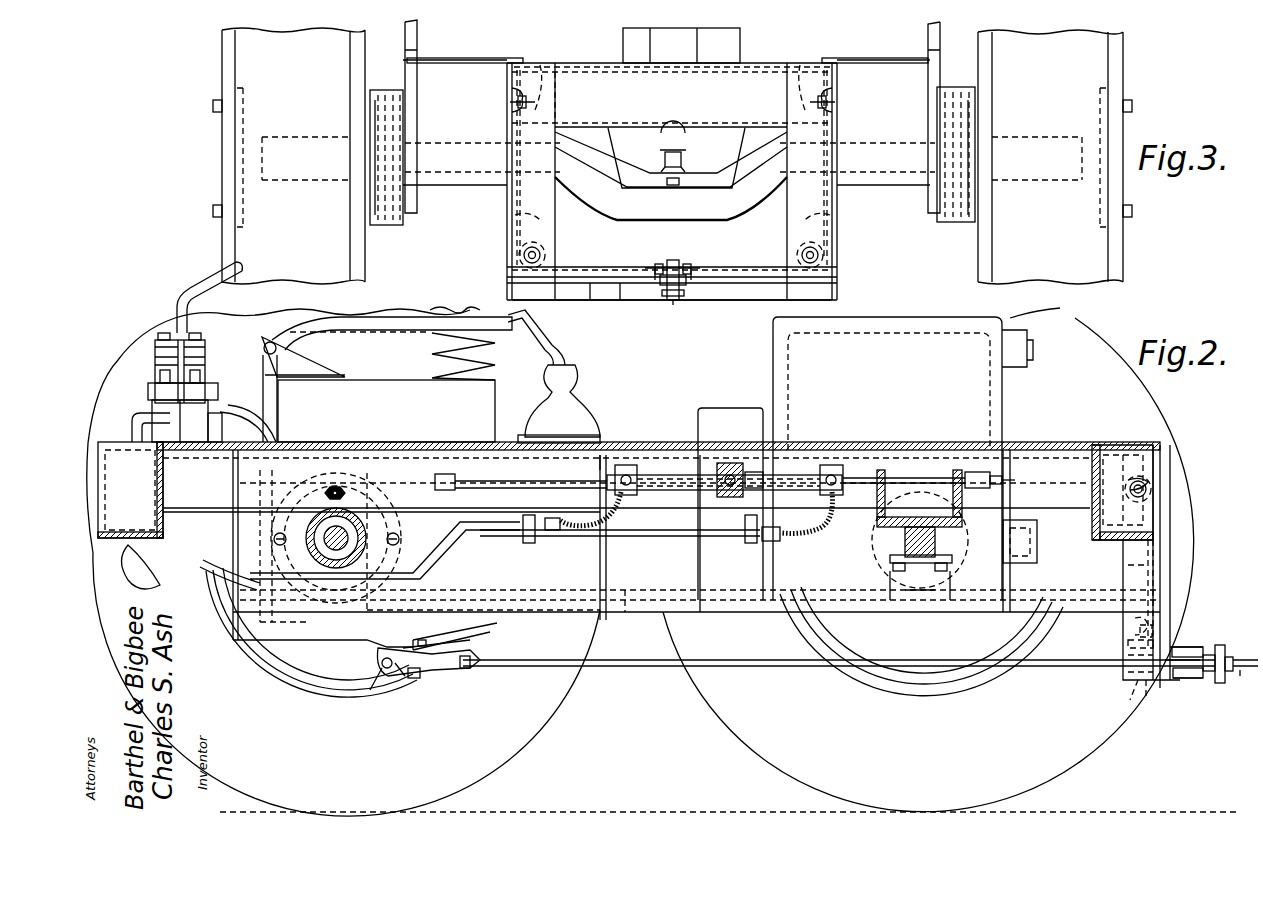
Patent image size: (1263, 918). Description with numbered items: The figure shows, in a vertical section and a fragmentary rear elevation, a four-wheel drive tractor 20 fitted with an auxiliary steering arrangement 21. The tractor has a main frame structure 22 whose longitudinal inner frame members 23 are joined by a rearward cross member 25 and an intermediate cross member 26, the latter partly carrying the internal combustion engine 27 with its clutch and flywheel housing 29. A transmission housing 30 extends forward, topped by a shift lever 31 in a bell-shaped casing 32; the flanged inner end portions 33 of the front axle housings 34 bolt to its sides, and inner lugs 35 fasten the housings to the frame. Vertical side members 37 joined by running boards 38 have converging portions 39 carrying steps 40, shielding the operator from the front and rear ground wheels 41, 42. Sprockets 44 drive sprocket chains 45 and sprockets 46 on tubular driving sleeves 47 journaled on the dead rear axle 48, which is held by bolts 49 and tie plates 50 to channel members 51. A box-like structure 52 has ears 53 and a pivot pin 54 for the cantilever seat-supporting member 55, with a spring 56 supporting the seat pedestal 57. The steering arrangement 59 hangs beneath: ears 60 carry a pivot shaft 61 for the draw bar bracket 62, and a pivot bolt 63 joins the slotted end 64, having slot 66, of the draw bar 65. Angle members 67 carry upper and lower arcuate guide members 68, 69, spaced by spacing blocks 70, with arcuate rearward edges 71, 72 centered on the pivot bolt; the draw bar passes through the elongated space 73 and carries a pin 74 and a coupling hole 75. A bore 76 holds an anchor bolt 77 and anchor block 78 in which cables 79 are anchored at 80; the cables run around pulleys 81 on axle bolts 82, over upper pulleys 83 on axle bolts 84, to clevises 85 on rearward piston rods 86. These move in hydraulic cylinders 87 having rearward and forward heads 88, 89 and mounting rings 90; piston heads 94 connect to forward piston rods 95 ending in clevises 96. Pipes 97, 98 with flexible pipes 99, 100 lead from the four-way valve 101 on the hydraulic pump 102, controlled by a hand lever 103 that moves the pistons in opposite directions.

In FIG. 2, the four-wheel drive tractor 20 is at (1126, 330).
In FIG. 2, the auxiliary steering arrangement 21 is at (1120, 438).
In FIG. 2, the main frame structure 22 is at (670, 438).
In FIG. 3, the longitudinal inner frame members 23 is at (545, 65).
In FIG. 2, the longitudinal inner frame members 23 is at (496, 550).
In FIG. 3, the rearward cross member 25 is at (760, 72).
In FIG. 3, the intermediate cross member 26 is at (745, 160).
In FIG. 2, the intermediate cross member 26 is at (1020, 563).
In FIG. 3, the internal combustion engine 27 is at (623, 43).
In FIG. 2, the internal combustion engine 27 is at (903, 458).
In FIG. 2, the clutch and flywheel housing 29 is at (732, 408).
In FIG. 2, the transmission housing 30 is at (532, 612).
In FIG. 2, the shift lever 31 is at (530, 322).
In FIG. 2, the bell-shaped casing 32 is at (575, 420).
In FIG. 2, the flanged inner end portions 33 is at (397, 548).
In FIG. 2, the front axle housings 34 is at (368, 540).
In FIG. 2, the inner lugs 35 is at (318, 488).
In FIG. 3, the side members 37 is at (418, 30).
In FIG. 2, the side members 37 is at (684, 612).
In FIG. 3, the horizontal plates or running boards 38 is at (492, 58).
In FIG. 2, the horizontal plates or running boards 38 is at (393, 442).
In FIG. 3, the converging portions 39 is at (428, 70).
In FIG. 2, the converging portions 39 is at (160, 486).
In FIG. 3, the steps 40 is at (457, 178).
In FIG. 2, the steps 40 is at (128, 536).
In FIG. 2, the front ground wheels 41 is at (520, 722).
In FIG. 2, the rear ground wheels 42 is at (745, 742).
In FIG. 2, the sprockets 44 is at (372, 496).
In FIG. 3, the sprocket chains 45 is at (397, 225).
In FIG. 2, the sprocket chains 45 is at (628, 615).
In FIG. 3, the sprockets 46 is at (380, 225).
In FIG. 2, the sprockets 46 is at (880, 585).
In FIG. 3, the tubular driving sleeves 47 is at (318, 137).
In FIG. 3, the rear axle 48 is at (600, 208).
In FIG. 2, the rear axle 48 is at (922, 600).
In FIG. 2, the bolts 49 is at (937, 545).
In FIG. 2, the tie plates 50 is at (890, 565).
In FIG. 2, the channel members 51 is at (985, 520).
In FIG. 2, the box-like structure 52 is at (495, 397).
In FIG. 2, the ears 53 is at (305, 358).
In FIG. 2, the pivot pin 54 is at (264, 348).
In FIG. 2, the cantilever seat-supporting member 55 is at (384, 330).
In FIG. 2, the spring 56 is at (432, 358).
In FIG. 2, the pedestal or upright 57 is at (433, 310).
In FIG. 3, the auxiliary steering arrangement 59 is at (715, 256).
In FIG. 2, the auxiliary steering arrangement 59 is at (1204, 626).
In FIG. 2, the ears 60 is at (375, 655).
In FIG. 2, the pivot shaft 61 is at (380, 688).
In FIG. 2, the draw bar bracket 62 is at (405, 685).
In FIG. 2, the pivot bolt 63 is at (422, 680).
In FIG. 2, the enlarged slotted end 64 is at (468, 672).
In FIG. 3, the draw bar 65 is at (660, 285).
In FIG. 2, the draw bar 65 is at (636, 668).
In FIG. 2, the slot 66 is at (440, 648).
In FIG. 3, the angle members 67 is at (507, 238).
In FIG. 2, the angle members 67 is at (1172, 540).
In FIG. 3, the upper arcuate guide member 68 is at (760, 267).
In FIG. 2, the upper arcuate guide member 68 is at (1190, 650).
In FIG. 3, the lower arcuate guide member 69 is at (710, 298).
In FIG. 2, the lower arcuate guide member 69 is at (1182, 680).
In FIG. 3, the spacing blocks 70 is at (837, 286).
In FIG. 2, the spacing blocks 70 is at (1168, 690).
In FIG. 3, the arcuate rearward edge 71 is at (617, 268).
In FIG. 2, the arcuate rearward edge 71 is at (1208, 655).
In FIG. 3, the arcuate rearward edge 72 is at (620, 300).
In FIG. 2, the arcuate rearward edge 72 is at (1205, 685).
In FIG. 3, the elongated space 73 is at (594, 292).
In FIG. 2, the elongated space 73 is at (1226, 655).
In FIG. 3, the pin 74 is at (678, 260).
In FIG. 2, the pin 74 is at (1230, 680).
In FIG. 3, the drilled hole 75 is at (688, 285).
In FIG. 2, the drilled hole 75 is at (1236, 672).
In FIG. 2, the bore 76 is at (1128, 660).
In FIG. 2, the anchor bolt 77 is at (1133, 690).
In FIG. 3, the anchor block 78 is at (655, 265).
In FIG. 2, the anchor block 78 is at (1128, 645).
In FIG. 3, the cables 79 is at (520, 218).
In FIG. 2, the cables 79 is at (1042, 488).
In FIG. 3, the anchorage 80 is at (645, 268).
In FIG. 3, the pulleys 81 is at (540, 242).
In FIG. 2, the pulleys 81 is at (1142, 618).
In FIG. 3, the axle bolts 82 is at (524, 256).
In FIG. 2, the axle bolts 82 is at (1138, 630).
In FIG. 3, the upper pulleys 83 is at (512, 92).
In FIG. 2, the upper pulleys 83 is at (1128, 480).
In FIG. 3, the axle bolts 84 is at (510, 104).
In FIG. 2, the axle bolts 84 is at (1127, 494).
In FIG. 2, the clevises 85 is at (975, 470).
In FIG. 2, the rearward piston rods 86 is at (925, 478).
In FIG. 2, the hydraulic cylinders 87 is at (815, 462).
In FIG. 2, the rearward head 88 is at (838, 465).
In FIG. 2, the forward head 89 is at (628, 465).
In FIG. 2, the intermediate mounting ring 90 is at (732, 463).
In FIG. 2, the piston heads 94 is at (762, 480).
In FIG. 2, the forward piston rods 95 is at (540, 475).
In FIG. 2, the clevises 96 is at (452, 490).
In FIG. 2, the pipe 97 is at (130, 420).
In FIG. 2, the pipe 98 is at (230, 400).
In FIG. 2, the flexible connecting pipe 99 is at (812, 530).
In FIG. 2, the flexible connecting pipe 100 is at (606, 522).
In FIG. 2, the four-way hydraulic control valve 101 is at (155, 392).
In FIG. 2, the hydraulic pump 102 is at (152, 590).
In FIG. 2, the hand lever 103 is at (210, 284).